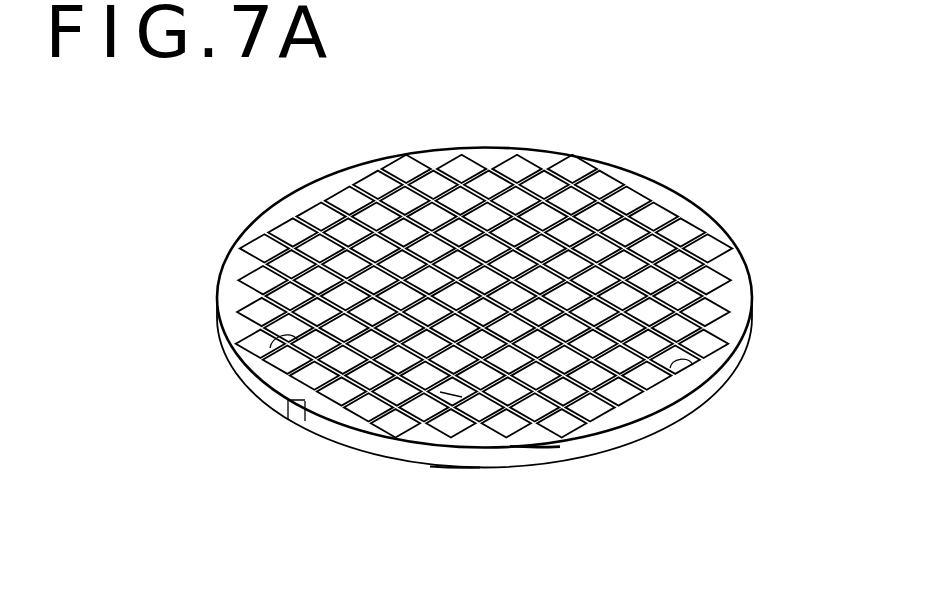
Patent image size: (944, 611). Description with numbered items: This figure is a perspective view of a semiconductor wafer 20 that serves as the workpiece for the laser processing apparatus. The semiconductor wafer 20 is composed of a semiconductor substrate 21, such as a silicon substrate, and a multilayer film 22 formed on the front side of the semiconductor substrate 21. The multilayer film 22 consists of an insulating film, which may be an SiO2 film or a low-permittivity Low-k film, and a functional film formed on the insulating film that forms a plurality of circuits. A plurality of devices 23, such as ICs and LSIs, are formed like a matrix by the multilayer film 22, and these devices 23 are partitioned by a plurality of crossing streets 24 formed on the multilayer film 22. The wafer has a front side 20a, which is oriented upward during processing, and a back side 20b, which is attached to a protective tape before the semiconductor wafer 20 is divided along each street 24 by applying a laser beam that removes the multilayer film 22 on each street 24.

The semiconductor wafer 20 is at (483, 321).
The front side 20a is at (638, 185).
The back side 20b is at (607, 453).
The semiconductor substrate 21 is at (453, 467).
The multilayer film 22 is at (535, 451).
The devices 23 is at (428, 402).
The streets 24 is at (290, 372).